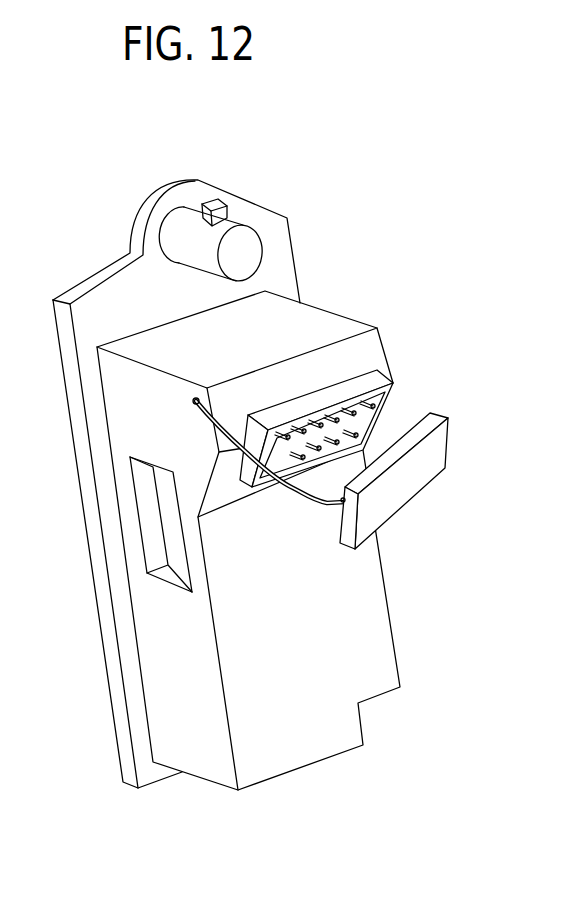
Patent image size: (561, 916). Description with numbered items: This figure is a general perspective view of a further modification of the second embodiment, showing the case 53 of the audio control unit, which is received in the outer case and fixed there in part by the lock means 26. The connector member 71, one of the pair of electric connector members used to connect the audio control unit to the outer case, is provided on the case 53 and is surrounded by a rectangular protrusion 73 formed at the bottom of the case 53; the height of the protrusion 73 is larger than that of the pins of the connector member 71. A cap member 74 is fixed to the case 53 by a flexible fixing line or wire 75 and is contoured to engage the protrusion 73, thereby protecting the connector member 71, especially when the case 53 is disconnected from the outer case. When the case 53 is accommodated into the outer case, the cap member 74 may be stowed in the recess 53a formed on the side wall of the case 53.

The lock means 26 is at (248, 235).
The case 53 is at (330, 318).
The recess 53a is at (153, 520).
The rectangular protrusion 73 is at (378, 372).
The connector member 71 is at (358, 425).
The cap member 74 is at (438, 455).
The flexible fixing line or wire 75 is at (300, 508).